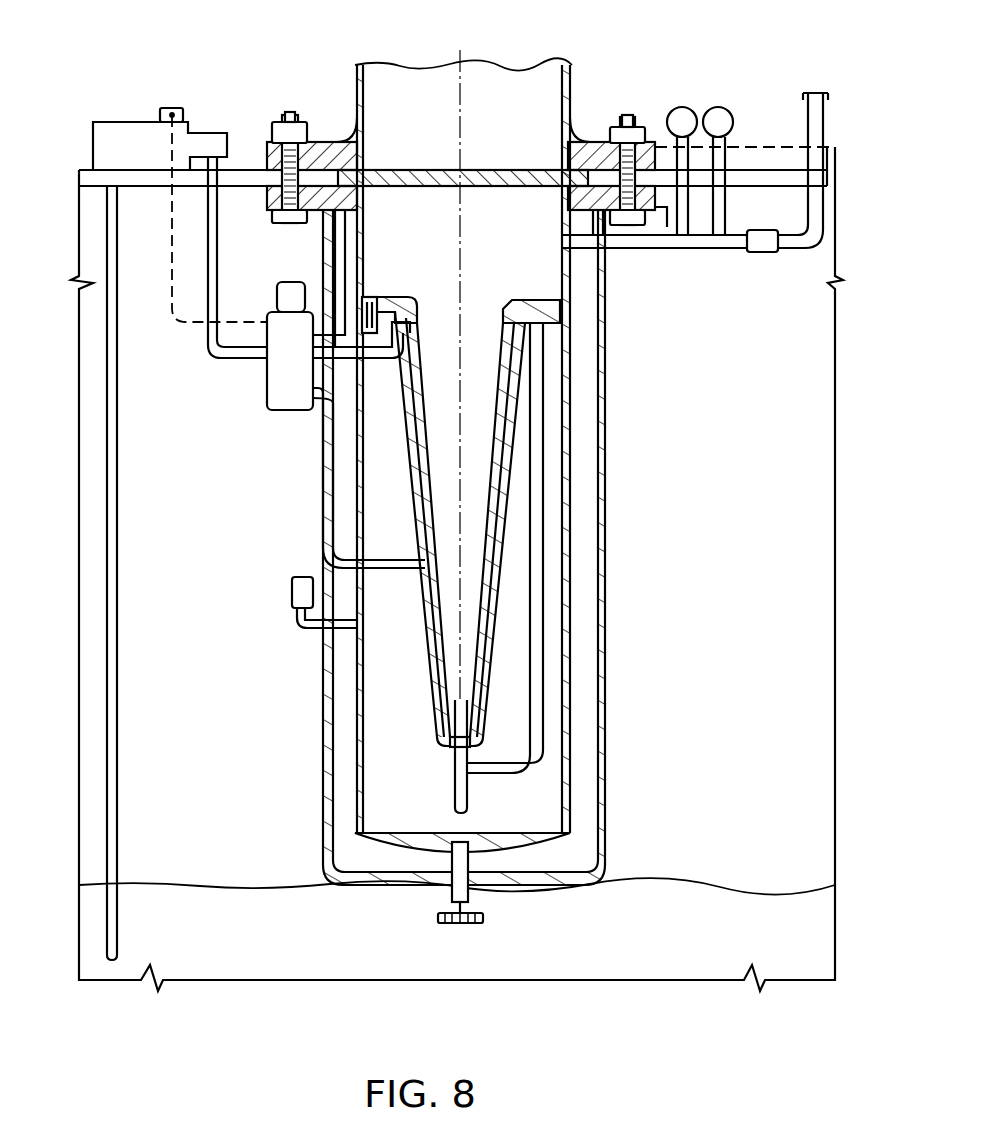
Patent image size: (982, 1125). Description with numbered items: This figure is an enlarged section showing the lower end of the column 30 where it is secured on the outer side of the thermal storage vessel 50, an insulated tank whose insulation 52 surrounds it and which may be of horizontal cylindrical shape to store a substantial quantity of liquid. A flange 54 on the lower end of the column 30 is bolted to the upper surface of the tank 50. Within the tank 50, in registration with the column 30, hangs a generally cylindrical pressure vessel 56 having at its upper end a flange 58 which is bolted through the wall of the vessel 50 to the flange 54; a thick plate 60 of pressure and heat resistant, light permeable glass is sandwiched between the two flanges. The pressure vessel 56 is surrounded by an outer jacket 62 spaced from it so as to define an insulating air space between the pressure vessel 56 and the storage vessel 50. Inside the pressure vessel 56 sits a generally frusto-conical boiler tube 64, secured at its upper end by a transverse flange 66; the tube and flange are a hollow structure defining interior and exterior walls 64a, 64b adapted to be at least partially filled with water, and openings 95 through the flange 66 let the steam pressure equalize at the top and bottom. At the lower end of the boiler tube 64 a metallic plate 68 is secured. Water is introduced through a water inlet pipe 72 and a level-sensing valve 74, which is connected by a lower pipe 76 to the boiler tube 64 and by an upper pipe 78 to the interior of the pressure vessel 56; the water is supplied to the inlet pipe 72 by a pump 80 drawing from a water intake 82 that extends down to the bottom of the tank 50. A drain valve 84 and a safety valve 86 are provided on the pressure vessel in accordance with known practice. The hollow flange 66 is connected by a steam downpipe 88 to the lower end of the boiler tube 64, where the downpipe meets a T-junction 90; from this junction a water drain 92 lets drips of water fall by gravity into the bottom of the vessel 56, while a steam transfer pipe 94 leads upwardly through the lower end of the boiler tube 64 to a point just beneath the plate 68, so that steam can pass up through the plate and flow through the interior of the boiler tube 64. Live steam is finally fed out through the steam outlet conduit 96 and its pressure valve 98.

The column 30 is at (568, 97).
The thermal storage vessel 50 is at (768, 177).
The insulation 52 is at (837, 162).
The flange 54 is at (593, 147).
The pressure vessel 56 is at (573, 377).
The flange 58 is at (655, 207).
The plate 60 is at (487, 177).
The outer jacket 62 is at (605, 488).
The boiler tube 64 is at (556, 522).
The interior wall 64a is at (484, 457).
The exterior wall 64b is at (505, 547).
The transverse flange 66 is at (535, 300).
The metallic plate 68 is at (457, 693).
The water inlet pipe 72 is at (253, 357).
The level-sensing valve 74 is at (275, 402).
The lower pipe 76 is at (323, 507).
The upper pipe 78 is at (327, 293).
The pump 80 is at (135, 140).
The water intake 82 is at (117, 580).
The drain valve 84 is at (477, 833).
The safety valve 86 is at (290, 587).
The steam downpipe 88 is at (537, 685).
The T-junction 90 is at (457, 770).
The water drain 92 is at (455, 797).
The steam transfer pipe 94 is at (458, 745).
The openings 95 is at (375, 298).
The steam outlet conduit 96 is at (703, 240).
The pressure valve 98 is at (763, 245).